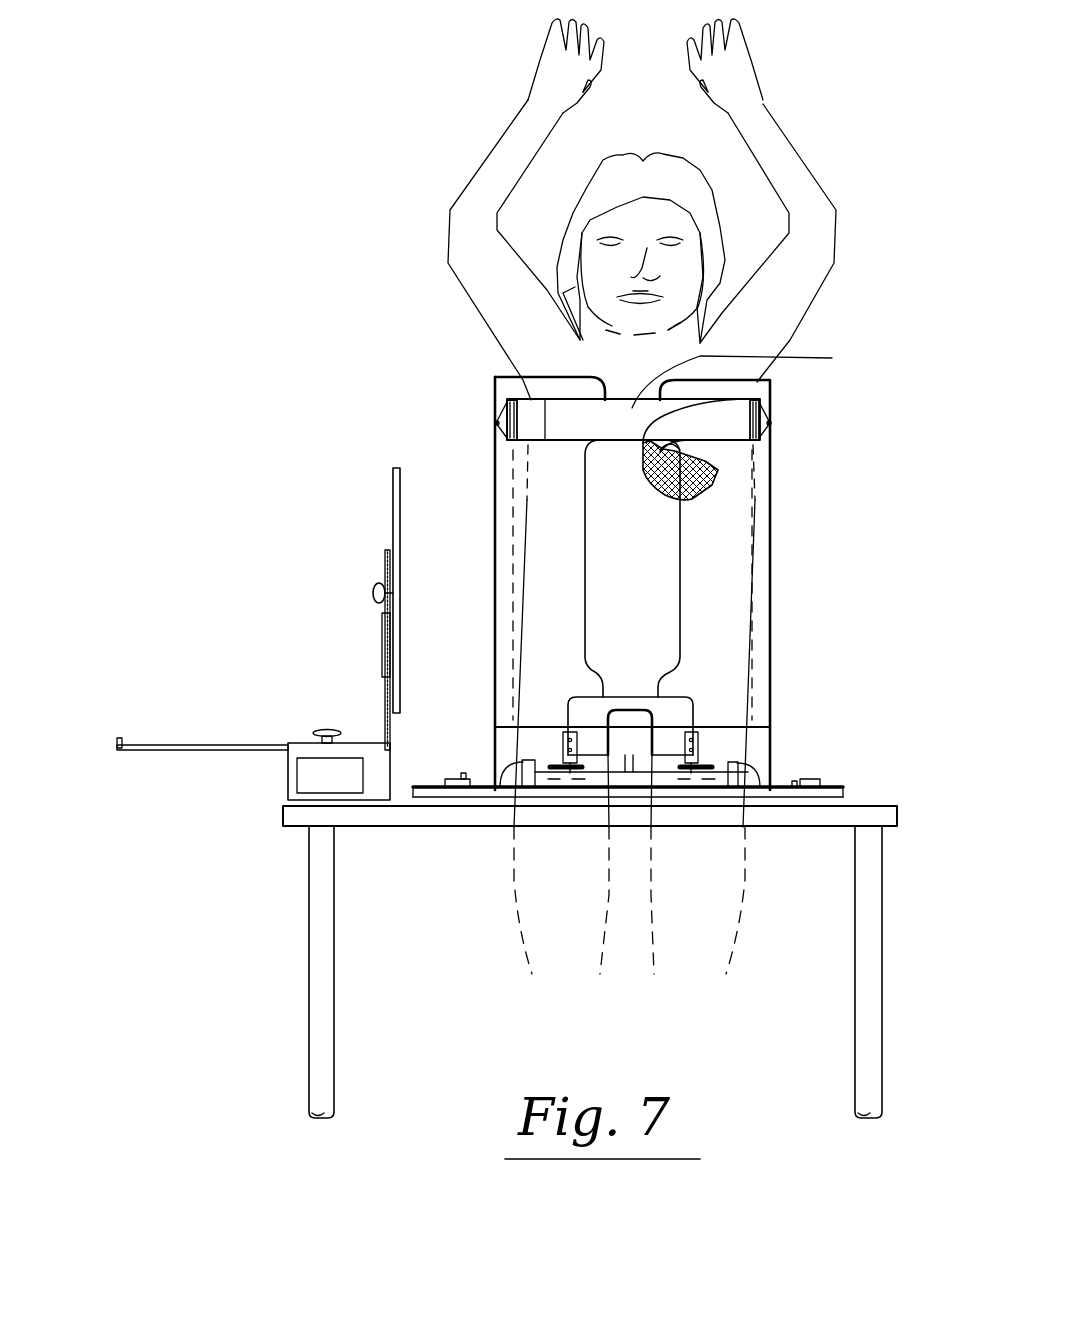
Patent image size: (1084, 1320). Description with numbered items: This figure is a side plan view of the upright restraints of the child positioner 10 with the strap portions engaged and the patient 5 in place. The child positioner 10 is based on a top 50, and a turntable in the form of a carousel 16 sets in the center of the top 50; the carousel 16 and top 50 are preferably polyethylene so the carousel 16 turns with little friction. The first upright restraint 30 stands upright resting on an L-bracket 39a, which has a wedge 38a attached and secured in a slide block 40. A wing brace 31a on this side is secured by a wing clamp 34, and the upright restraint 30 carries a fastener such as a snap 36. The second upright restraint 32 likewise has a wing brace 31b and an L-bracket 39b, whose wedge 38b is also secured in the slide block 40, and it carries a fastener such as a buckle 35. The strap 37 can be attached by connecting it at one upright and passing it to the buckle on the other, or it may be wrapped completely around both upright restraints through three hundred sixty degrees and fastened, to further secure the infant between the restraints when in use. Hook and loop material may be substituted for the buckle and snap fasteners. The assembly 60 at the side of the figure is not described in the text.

The patient 5 is at (787, 157).
The child positioner 10 is at (851, 568).
The carousel 16 is at (423, 808).
The first upright restraint 30 is at (771, 517).
The wing brace 31a is at (835, 787).
The wing brace 31b is at (420, 785).
The second upright restraint 32 is at (494, 488).
The wing clamp 34 is at (812, 779).
The buckle 35 is at (497, 420).
The snap 36 is at (772, 423).
The strap 37 is at (689, 422).
The wedge 38a is at (713, 757).
The wedge 38b is at (556, 757).
The L-bracket 39a is at (695, 727).
The L-bracket 39b is at (565, 727).
The slide block 40 is at (675, 793).
The top 50 is at (885, 806).
The indexing assembly 60 is at (320, 580).